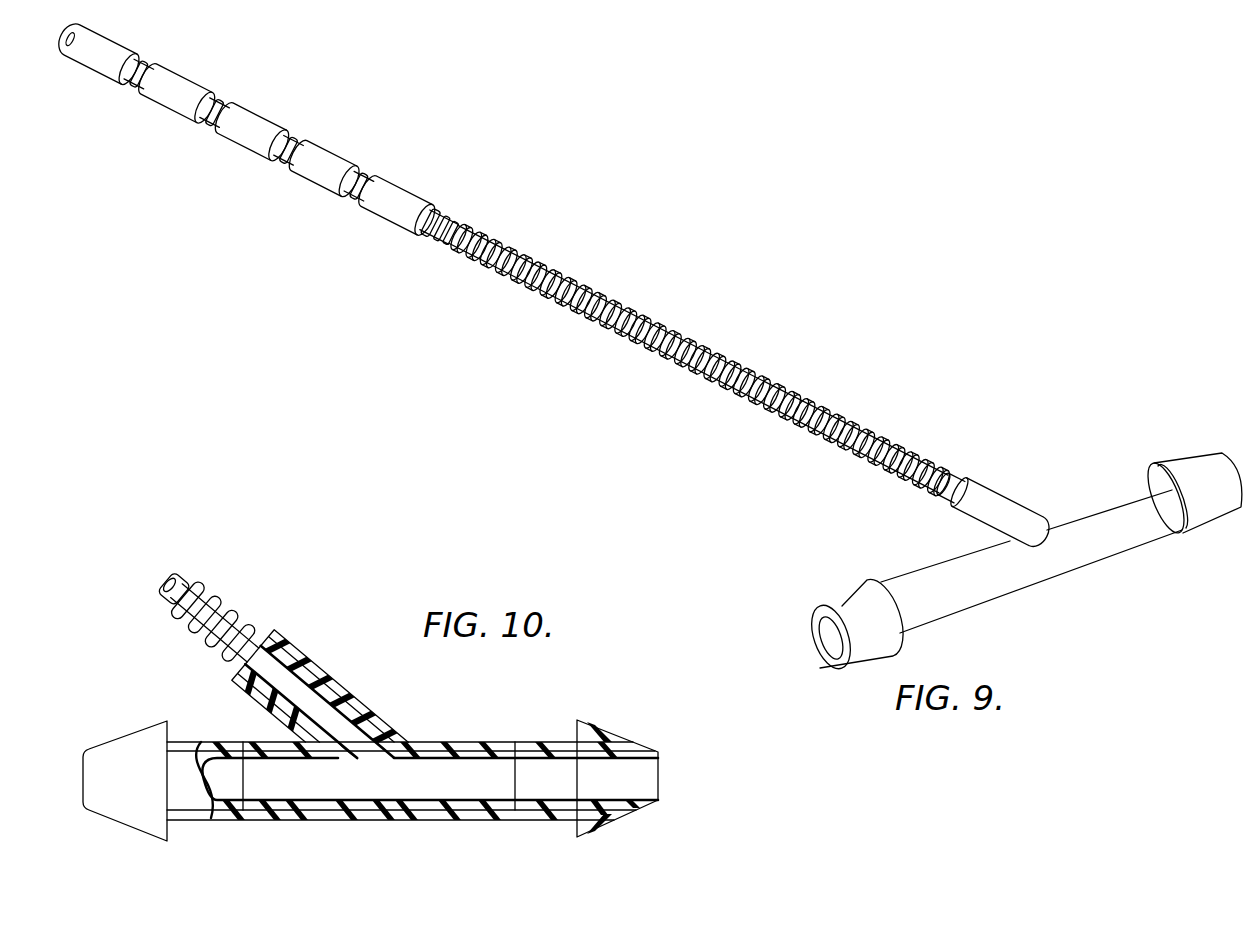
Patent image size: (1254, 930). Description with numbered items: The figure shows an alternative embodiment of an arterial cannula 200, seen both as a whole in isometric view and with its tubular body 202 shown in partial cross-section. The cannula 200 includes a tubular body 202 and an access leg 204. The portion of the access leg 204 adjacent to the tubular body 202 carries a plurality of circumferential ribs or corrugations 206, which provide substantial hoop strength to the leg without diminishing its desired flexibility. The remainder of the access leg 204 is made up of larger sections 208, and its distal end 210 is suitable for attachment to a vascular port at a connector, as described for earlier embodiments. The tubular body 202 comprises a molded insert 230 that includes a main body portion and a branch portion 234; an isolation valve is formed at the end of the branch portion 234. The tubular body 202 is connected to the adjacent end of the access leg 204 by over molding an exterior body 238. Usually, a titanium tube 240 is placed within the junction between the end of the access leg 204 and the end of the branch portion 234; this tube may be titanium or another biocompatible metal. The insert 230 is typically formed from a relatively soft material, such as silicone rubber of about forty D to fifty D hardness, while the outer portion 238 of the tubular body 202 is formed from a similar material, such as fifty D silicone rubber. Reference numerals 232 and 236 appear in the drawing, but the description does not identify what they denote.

In FIG. 9, the arterial cannula 200 is at (458, 359).
In FIG. 9, the tubular body 202 is at (1088, 543).
In FIG. 9, the access leg 204 is at (420, 218).
In FIG. 9, the circumferential ribs or corrugations 206 is at (803, 402).
In FIG. 9, the larger sections 208 is at (328, 160).
In FIG. 9, the distal end 210 is at (92, 60).
In FIG. 10, the molded insert 230 is at (385, 802).
In FIG. 10, the central lumen 232 is at (303, 792).
In FIG. 10, the branch portion 234 is at (352, 740).
In FIG. 10, the hub wall 236 is at (385, 738).
In FIG. 10, the exterior body 238 is at (534, 810).
In FIG. 10, the titanium tube 240 is at (280, 673).